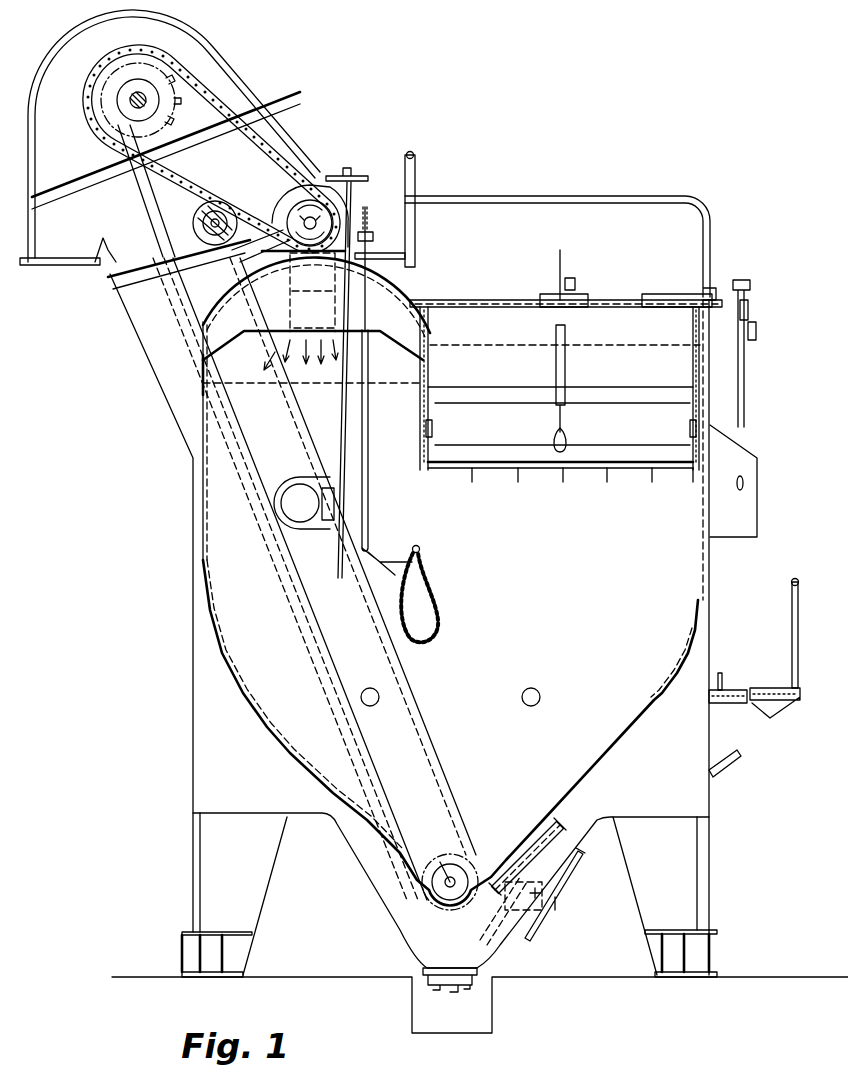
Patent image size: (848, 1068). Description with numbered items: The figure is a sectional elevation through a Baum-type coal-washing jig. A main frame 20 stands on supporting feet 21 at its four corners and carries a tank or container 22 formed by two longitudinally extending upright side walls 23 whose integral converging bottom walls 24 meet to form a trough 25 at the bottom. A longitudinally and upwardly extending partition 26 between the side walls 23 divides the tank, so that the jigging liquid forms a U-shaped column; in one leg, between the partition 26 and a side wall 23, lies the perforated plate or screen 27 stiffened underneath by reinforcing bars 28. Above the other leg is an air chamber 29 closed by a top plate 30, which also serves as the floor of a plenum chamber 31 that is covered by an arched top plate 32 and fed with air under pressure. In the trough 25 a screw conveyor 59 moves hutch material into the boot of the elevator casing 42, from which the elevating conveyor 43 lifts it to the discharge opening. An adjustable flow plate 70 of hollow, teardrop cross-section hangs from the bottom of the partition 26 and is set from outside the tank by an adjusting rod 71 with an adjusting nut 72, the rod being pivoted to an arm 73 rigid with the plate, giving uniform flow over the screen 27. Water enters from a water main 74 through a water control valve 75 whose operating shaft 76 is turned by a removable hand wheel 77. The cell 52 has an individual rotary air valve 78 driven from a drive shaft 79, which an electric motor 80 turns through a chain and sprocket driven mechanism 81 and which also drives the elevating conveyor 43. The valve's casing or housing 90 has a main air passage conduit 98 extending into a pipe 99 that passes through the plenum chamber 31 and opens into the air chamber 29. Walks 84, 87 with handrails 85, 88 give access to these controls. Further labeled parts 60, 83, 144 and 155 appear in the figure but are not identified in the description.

The main frame 20 is at (729, 806).
The supporting feet 21 is at (215, 874).
The tank or container 22 is at (182, 513).
The upright side walls 23 is at (200, 412).
The converging bottom walls 24 is at (278, 741).
The trough 25 is at (452, 906).
The partition 26 is at (442, 434).
The perforated plate or screen 27 is at (585, 462).
The reinforcing bars 28 is at (614, 482).
The air chamber 29 is at (394, 365).
The top plate 30 is at (370, 333).
The plenum chamber 31 is at (313, 343).
The arched top plate 32 is at (397, 296).
The elevator casing 42 is at (229, 52).
The elevating conveyor 43 is at (256, 439).
The cell 52 is at (631, 570).
The screw conveyor 59 is at (460, 868).
The frame base 60 is at (72, 268).
The adjustable flow plate 70 is at (440, 614).
The adjusting rod 71 is at (367, 210).
The adjusting nut 72 is at (373, 236).
The arm 73 is at (381, 565).
The water main 74 is at (290, 488).
The water control valve 75 is at (334, 504).
The operating shaft 76 is at (338, 395).
The hand wheel 77 is at (338, 172).
The rotary air valve 78 is at (322, 175).
The drive shaft 79 is at (296, 261).
The electric motor 80 is at (206, 220).
The chain and sprocket driven mechanism 81 is at (282, 195).
The motor sprocket 83 is at (232, 127).
The walk 84 is at (395, 257).
The handrail 85 is at (414, 152).
The walk 87 is at (592, 298).
The handrail 88 is at (645, 196).
The casing or housing 90 is at (285, 214).
The main air passage conduit 98 is at (312, 292).
The pipe 99 is at (312, 313).
The spray streams 144 is at (285, 350).
The water level 155 is at (607, 348).